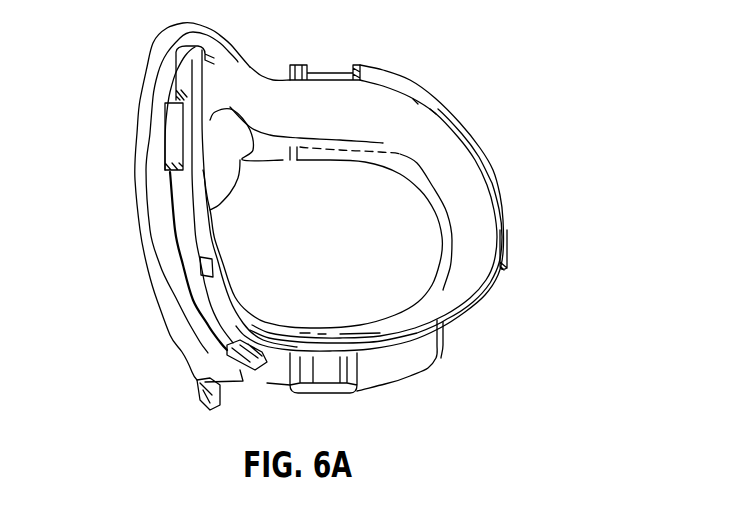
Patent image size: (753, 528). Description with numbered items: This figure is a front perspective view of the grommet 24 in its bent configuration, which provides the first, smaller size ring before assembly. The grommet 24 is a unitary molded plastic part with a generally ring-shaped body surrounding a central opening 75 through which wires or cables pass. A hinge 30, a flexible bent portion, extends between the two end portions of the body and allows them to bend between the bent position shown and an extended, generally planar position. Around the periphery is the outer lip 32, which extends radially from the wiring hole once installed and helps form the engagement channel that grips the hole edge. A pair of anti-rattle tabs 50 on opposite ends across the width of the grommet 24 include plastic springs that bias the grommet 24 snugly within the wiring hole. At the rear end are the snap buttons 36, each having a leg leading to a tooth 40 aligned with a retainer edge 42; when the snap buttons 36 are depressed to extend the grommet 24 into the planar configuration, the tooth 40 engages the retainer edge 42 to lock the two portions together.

The grommet 24 is at (491, 93).
The hinge 30 is at (267, 97).
The outer lip 32 is at (193, 85).
The snap buttons 36 is at (212, 210).
The tooth 40 is at (260, 368).
The retainer edge 42 is at (333, 362).
The anti-rattle tabs 50 is at (170, 147).
The central opening 75 is at (350, 275).